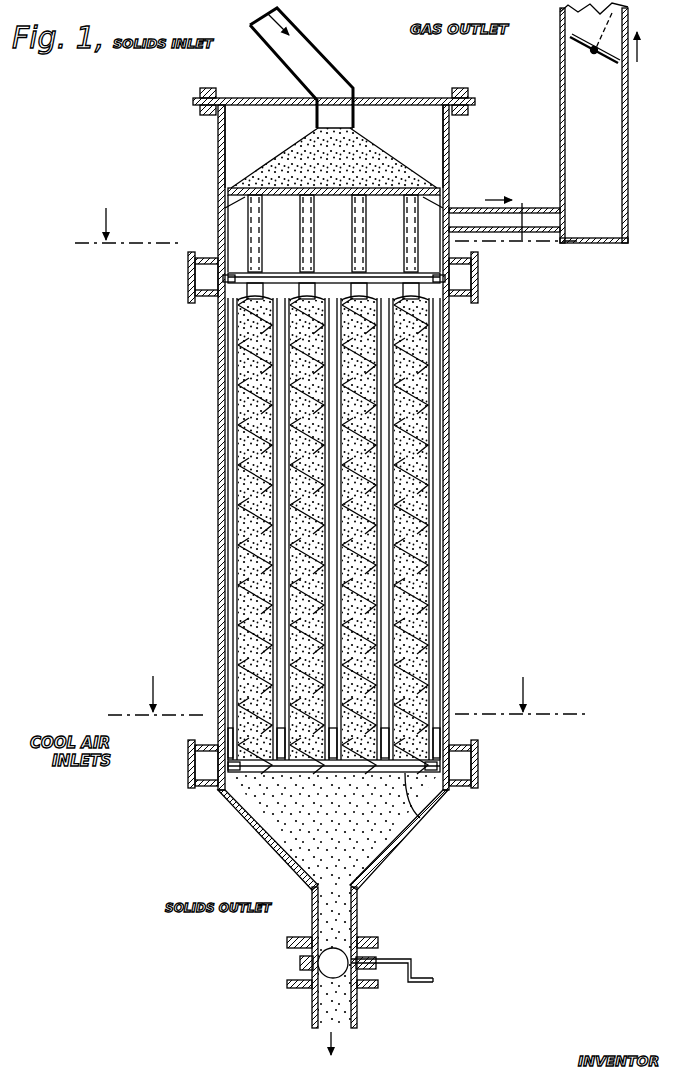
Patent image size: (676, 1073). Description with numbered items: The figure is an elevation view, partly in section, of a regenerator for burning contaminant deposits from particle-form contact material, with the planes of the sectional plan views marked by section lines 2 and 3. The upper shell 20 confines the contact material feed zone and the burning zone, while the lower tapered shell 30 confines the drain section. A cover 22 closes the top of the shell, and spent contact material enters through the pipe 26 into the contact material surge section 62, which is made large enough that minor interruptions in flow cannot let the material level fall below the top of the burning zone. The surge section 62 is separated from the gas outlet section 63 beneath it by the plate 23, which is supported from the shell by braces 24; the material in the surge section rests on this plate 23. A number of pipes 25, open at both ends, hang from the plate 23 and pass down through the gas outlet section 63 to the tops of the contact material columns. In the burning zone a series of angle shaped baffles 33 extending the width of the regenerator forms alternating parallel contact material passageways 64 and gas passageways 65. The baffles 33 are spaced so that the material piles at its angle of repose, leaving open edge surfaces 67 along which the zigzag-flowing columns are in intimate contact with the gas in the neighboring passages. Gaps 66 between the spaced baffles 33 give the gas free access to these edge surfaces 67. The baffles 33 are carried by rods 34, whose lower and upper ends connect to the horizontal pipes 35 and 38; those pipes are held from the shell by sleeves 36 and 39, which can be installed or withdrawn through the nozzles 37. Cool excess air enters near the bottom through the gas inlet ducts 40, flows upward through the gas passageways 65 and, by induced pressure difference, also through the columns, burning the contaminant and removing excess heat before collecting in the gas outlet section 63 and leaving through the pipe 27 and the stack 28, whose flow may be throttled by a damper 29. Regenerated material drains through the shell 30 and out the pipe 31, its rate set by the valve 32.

The section line 2- 2 is at (327, 213).
The section line 3- 3 is at (346, 684).
The shell 20 is at (444, 457).
The top flange / cover 22 is at (238, 97).
The plate 23 is at (442, 188).
The braces 24 is at (446, 195).
The pipes 25 is at (403, 220).
The pipe 26 is at (310, 48).
The pipe 27 is at (543, 233).
The stack 28 is at (629, 148).
The damper valve 29 is at (577, 43).
The shell 30 is at (250, 827).
The pipe 31 is at (358, 915).
The valve 32 is at (318, 961).
The angle shaped baffles 33 is at (270, 470).
The rods 34 is at (418, 538).
The horizontal pipe 35 is at (282, 272).
The sleeve 36 is at (490, 284).
The nozzles 37 is at (459, 787).
The horizontal pipe 38 is at (342, 828).
The sleeve 39 is at (488, 780).
The gas inlet ducts 40 is at (220, 741).
The contact material surge section 62 is at (243, 138).
The gas outlet section 63 is at (235, 213).
The contact material passageways 64 is at (302, 370).
The gas passageways 65 is at (388, 586).
The annular gas passage 66 is at (250, 430).
The edge surfaces 67 is at (423, 527).